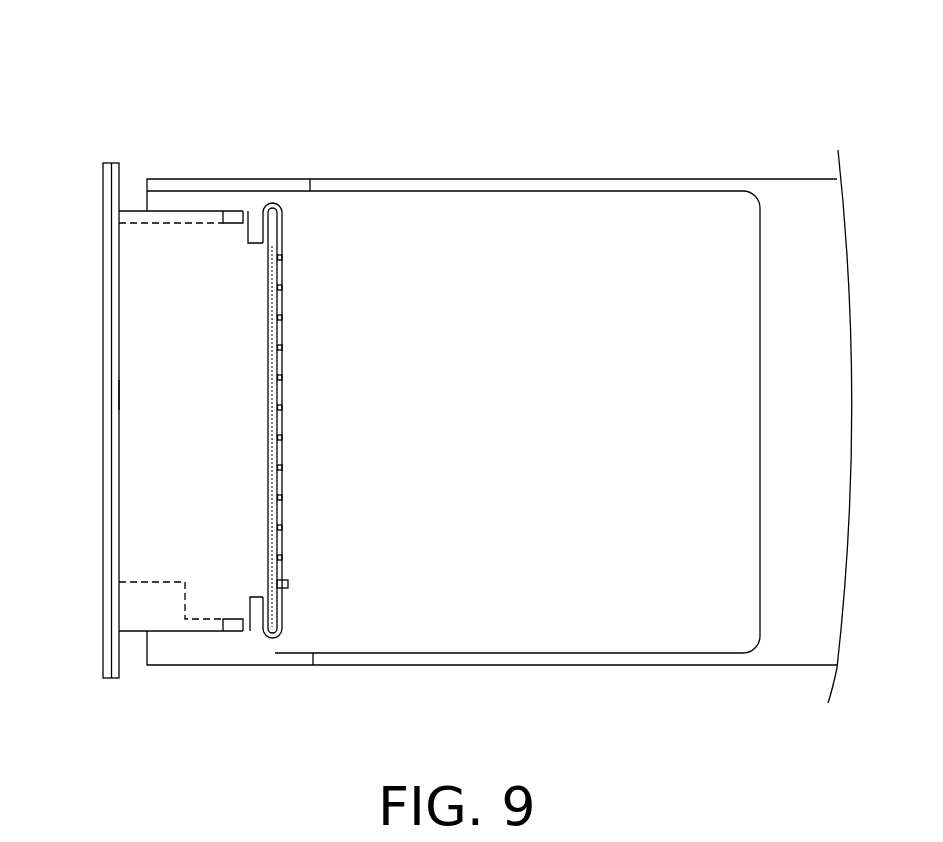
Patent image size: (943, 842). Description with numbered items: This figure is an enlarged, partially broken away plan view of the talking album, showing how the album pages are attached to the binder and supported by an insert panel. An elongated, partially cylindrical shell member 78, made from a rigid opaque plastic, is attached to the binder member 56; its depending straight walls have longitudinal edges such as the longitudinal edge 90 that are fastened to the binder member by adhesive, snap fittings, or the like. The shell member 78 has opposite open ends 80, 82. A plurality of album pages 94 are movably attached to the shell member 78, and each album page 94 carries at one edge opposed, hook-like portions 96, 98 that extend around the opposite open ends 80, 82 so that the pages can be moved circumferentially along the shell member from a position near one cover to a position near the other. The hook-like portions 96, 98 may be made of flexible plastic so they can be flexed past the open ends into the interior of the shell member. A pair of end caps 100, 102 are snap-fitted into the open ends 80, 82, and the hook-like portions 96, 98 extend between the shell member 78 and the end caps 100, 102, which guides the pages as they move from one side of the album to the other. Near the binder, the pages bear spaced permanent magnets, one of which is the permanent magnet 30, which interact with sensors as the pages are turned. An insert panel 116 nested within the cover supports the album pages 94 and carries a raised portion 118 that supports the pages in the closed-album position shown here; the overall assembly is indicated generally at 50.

The permanent magnet 30 is at (288, 585).
The housing assembly 50 is at (633, 95).
The binder member 56 is at (103, 333).
The shell member 78 is at (260, 365).
The open end 80 is at (180, 209).
The open end 82 is at (173, 633).
The longitudinal edge 90 is at (119, 395).
The album page 94 is at (750, 338).
The hook-like portion 96 is at (257, 217).
The hook-like portion 98 is at (257, 625).
The end cap 100 is at (270, 261).
The end cap 102 is at (230, 633).
The insert panel 116 is at (680, 668).
The raised portion 118 is at (765, 193).